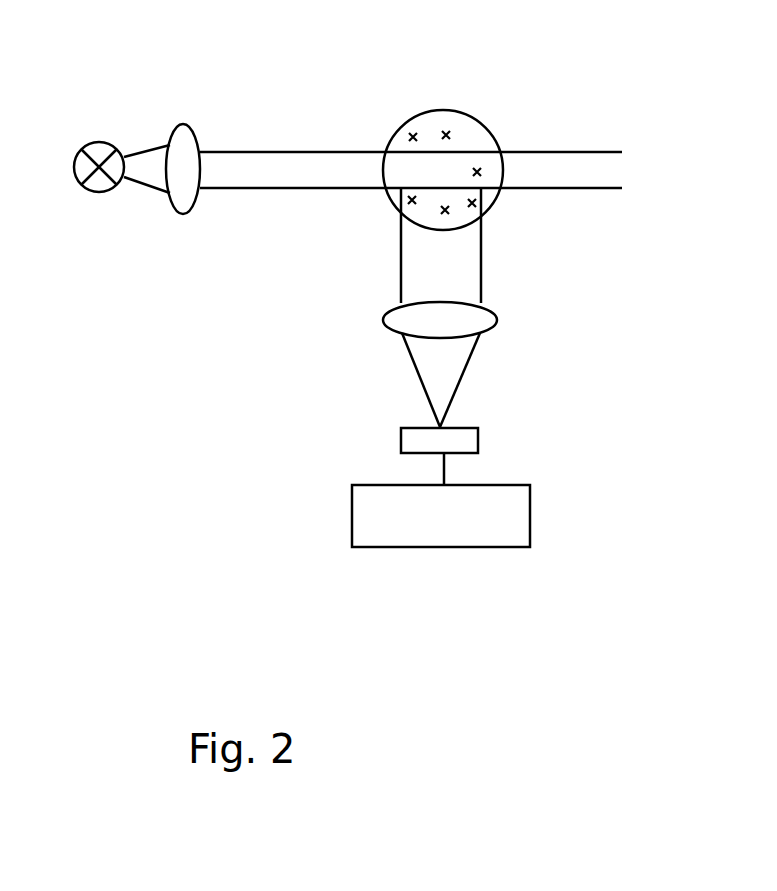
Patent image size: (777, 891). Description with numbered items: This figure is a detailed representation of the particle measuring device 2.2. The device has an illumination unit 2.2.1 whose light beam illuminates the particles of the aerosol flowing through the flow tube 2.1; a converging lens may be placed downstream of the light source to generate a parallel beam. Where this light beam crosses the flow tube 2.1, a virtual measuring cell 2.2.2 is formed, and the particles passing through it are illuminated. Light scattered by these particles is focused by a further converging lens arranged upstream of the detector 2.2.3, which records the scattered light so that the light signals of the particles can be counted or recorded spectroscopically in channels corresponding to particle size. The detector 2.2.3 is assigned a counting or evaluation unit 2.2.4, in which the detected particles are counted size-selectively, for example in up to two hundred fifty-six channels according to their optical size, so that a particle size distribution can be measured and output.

The flow tube 2.1 is at (468, 110).
The particle measuring device 2.2 is at (282, 432).
The illumination unit 2.2.1 is at (102, 141).
The measuring cell 2.2.2 is at (402, 175).
The detector 2.2.3 is at (478, 440).
The counting or evaluation unit 2.2.4 is at (352, 525).